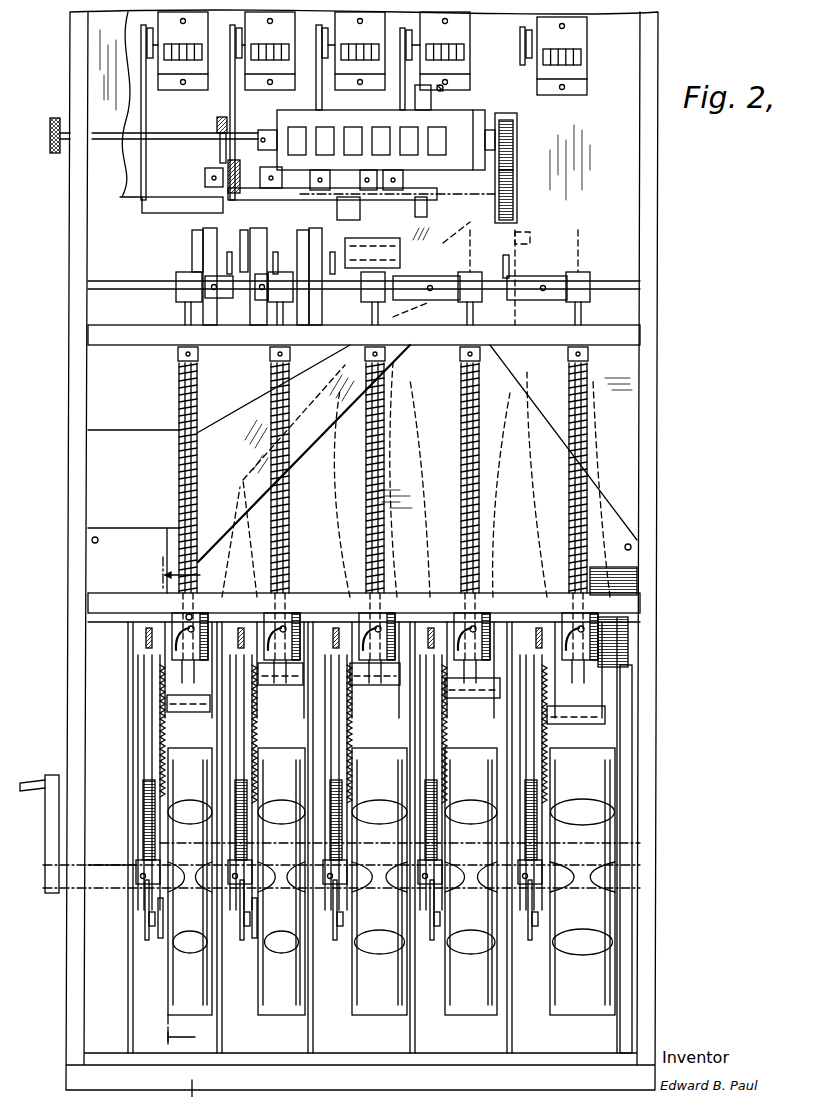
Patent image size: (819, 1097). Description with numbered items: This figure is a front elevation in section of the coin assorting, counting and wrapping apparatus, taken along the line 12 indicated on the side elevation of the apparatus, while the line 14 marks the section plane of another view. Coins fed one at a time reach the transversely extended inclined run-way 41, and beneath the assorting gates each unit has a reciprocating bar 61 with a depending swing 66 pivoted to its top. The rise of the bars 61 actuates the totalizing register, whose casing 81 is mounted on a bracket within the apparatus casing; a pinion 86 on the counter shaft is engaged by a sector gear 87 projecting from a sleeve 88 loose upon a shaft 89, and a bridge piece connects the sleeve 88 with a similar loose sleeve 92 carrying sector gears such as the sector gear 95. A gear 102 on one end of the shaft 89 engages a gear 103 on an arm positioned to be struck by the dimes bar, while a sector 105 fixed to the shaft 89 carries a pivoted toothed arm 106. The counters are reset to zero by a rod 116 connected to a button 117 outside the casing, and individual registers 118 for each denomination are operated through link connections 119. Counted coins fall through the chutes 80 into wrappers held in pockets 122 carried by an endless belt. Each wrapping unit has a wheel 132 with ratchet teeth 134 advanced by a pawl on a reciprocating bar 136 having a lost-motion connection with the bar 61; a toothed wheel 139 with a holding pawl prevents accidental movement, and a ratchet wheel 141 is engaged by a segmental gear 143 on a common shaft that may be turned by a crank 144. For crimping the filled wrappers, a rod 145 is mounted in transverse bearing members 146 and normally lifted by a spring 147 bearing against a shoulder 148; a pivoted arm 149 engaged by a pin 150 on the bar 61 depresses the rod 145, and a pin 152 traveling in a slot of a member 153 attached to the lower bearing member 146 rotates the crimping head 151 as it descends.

The plate 12 is at (198, 465).
The section line 14 is at (181, 800).
The inclined run-way 41 is at (237, 393).
The reciprocating bar 61 is at (217, 242).
The depending swing 66 is at (197, 233).
The chute 80 is at (535, 410).
The register casing 81 is at (452, 122).
The pinion 86 is at (513, 128).
The sector gear 87 is at (513, 176).
The sleeve 88 is at (155, 920).
The shaft 89 is at (257, 175).
The loose sleeve 92 is at (348, 199).
The sector gear 95 is at (267, 153).
The gear 102 is at (227, 152).
The gear 103 is at (222, 117).
The sector 105 is at (438, 192).
The toothed arm 106 is at (420, 200).
The reset rod 116 is at (172, 143).
The button 117 is at (47, 145).
The individual register 118 is at (168, 72).
The link connection 119 is at (143, 120).
The pocket 122 is at (175, 967).
The ratchet-carrying wheel 132 is at (336, 782).
The ratchet teeth 134 is at (143, 745).
The reciprocating bar 136 is at (143, 634).
The toothed wheel 139 is at (145, 778).
The ratchet wheel 141 is at (150, 722).
The segmental gear 143 is at (145, 915).
The crank 144 is at (52, 838).
The rod 145 is at (182, 392).
The transverse bearing member 146 is at (117, 337).
The spring 147 is at (267, 570).
The shoulder 148 is at (178, 358).
The pivoted arm 149 is at (183, 280).
The pin 150 is at (313, 267).
The crimping head 151 is at (182, 707).
The pin 152 is at (188, 617).
The slotted member 153 is at (178, 648).